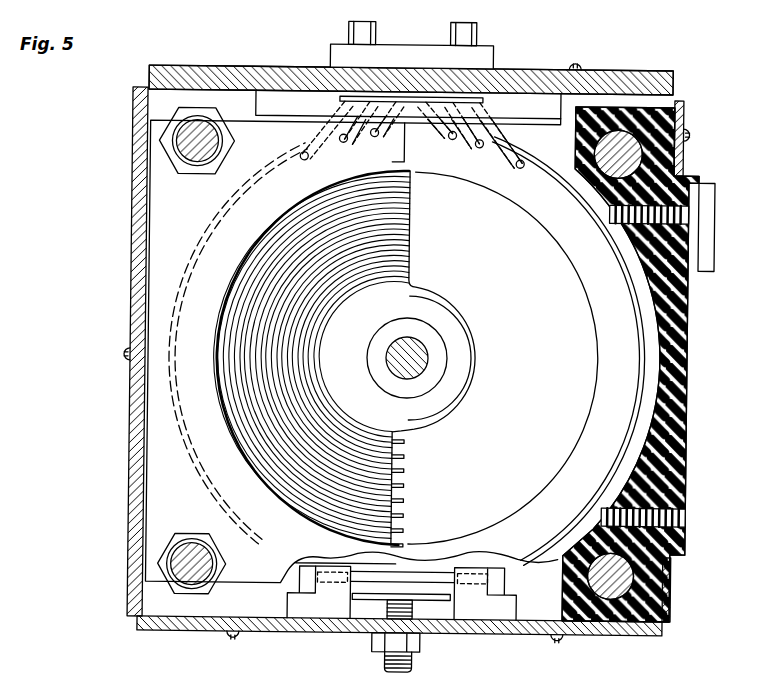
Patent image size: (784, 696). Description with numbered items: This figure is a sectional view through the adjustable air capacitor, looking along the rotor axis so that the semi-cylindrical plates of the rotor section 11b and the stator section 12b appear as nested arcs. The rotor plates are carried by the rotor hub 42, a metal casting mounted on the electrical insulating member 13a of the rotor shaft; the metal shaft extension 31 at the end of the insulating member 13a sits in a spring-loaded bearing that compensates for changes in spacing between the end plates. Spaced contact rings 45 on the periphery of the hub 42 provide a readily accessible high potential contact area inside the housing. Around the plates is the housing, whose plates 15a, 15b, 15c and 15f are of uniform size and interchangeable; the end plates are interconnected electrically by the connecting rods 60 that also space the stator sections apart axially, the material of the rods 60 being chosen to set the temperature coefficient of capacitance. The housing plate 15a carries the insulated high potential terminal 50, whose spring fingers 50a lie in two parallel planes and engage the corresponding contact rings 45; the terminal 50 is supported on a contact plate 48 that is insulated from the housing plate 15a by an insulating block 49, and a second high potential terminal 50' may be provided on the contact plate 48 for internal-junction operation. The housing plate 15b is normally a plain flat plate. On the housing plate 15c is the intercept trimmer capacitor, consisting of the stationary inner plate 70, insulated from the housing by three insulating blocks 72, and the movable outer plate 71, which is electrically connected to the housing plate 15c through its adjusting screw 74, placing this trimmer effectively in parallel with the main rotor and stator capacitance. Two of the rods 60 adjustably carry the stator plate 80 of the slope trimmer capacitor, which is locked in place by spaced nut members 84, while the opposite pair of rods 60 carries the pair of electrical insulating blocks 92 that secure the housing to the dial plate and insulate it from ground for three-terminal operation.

The rotor section 11b is at (393, 460).
The stator section 12b is at (390, 484).
The electrical insulating member 13a is at (429, 369).
The housing plate 15a is at (594, 80).
The housing plate 15b is at (137, 389).
The housing plate 15c is at (603, 633).
The housing plate 15f is at (682, 112).
The shaft extension 31 is at (427, 345).
The rotor hub 42 is at (530, 256).
The contact rings 45 is at (537, 178).
The contact plate 48 is at (490, 58).
The insulating block 49 is at (303, 106).
The high potential terminal 50 is at (343, 32).
The second high potential terminal 50' is at (487, 33).
The spring fingers 50a is at (495, 130).
The connecting rods 60 is at (653, 155).
The inner plate 70 is at (444, 574).
The outer plate 71 is at (430, 598).
The insulating blocks 72 is at (325, 609).
The adjusting screw 74 is at (416, 663).
The stator plate 80 is at (153, 477).
The nut members 84 is at (163, 155).
The electrical insulating blocks 92 is at (697, 181).